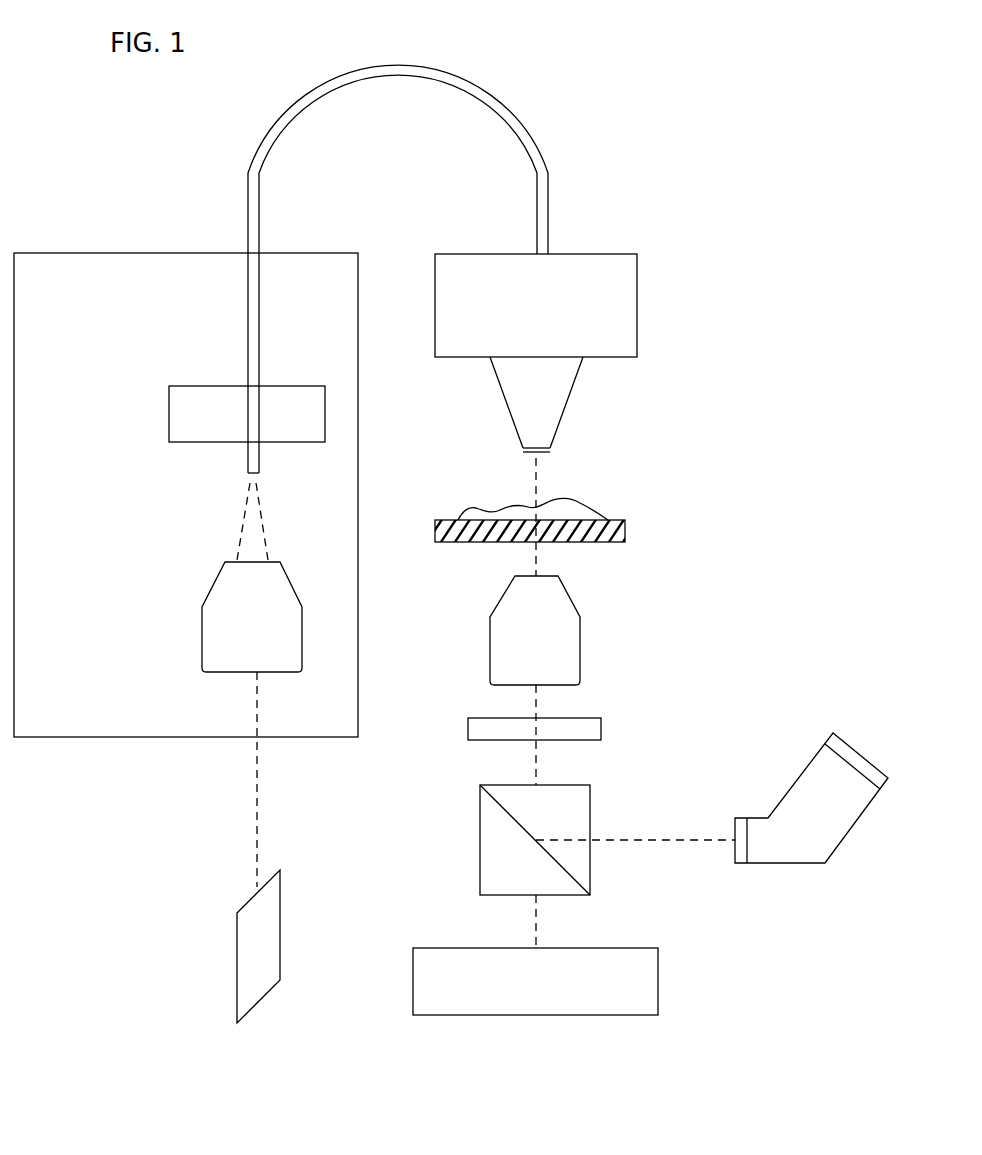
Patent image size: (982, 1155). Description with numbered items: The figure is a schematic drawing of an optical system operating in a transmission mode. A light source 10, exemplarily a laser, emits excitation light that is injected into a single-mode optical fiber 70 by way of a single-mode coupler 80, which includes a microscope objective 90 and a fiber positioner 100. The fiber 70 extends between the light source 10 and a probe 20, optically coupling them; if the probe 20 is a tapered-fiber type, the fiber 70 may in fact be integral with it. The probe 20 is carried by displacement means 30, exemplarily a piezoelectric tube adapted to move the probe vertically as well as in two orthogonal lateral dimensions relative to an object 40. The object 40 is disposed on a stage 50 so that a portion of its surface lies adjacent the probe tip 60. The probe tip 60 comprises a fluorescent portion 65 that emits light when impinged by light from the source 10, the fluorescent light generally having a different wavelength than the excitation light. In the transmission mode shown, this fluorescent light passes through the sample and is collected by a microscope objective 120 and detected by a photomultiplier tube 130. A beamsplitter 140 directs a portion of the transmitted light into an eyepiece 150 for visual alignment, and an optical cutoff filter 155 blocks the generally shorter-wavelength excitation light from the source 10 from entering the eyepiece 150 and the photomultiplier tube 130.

The light source 10 is at (283, 925).
The probe 20 is at (570, 378).
The displacement means 30 is at (590, 254).
The object 40 is at (580, 510).
The stage 50 is at (625, 534).
The probe tip 60 is at (550, 452).
The fluorescent portion 65 is at (522, 452).
The single-mode optical fiber 70 is at (505, 113).
The single-mode coupler 80 is at (310, 253).
The microscope objective 90 is at (293, 585).
The fiber positioner 100 is at (290, 386).
The microscope objective 120 is at (572, 598).
The photomultiplier tube 130 is at (620, 948).
The beamsplitter 140 is at (563, 785).
The eyepiece 150 is at (800, 863).
The optical cutoff filter 155 is at (575, 718).